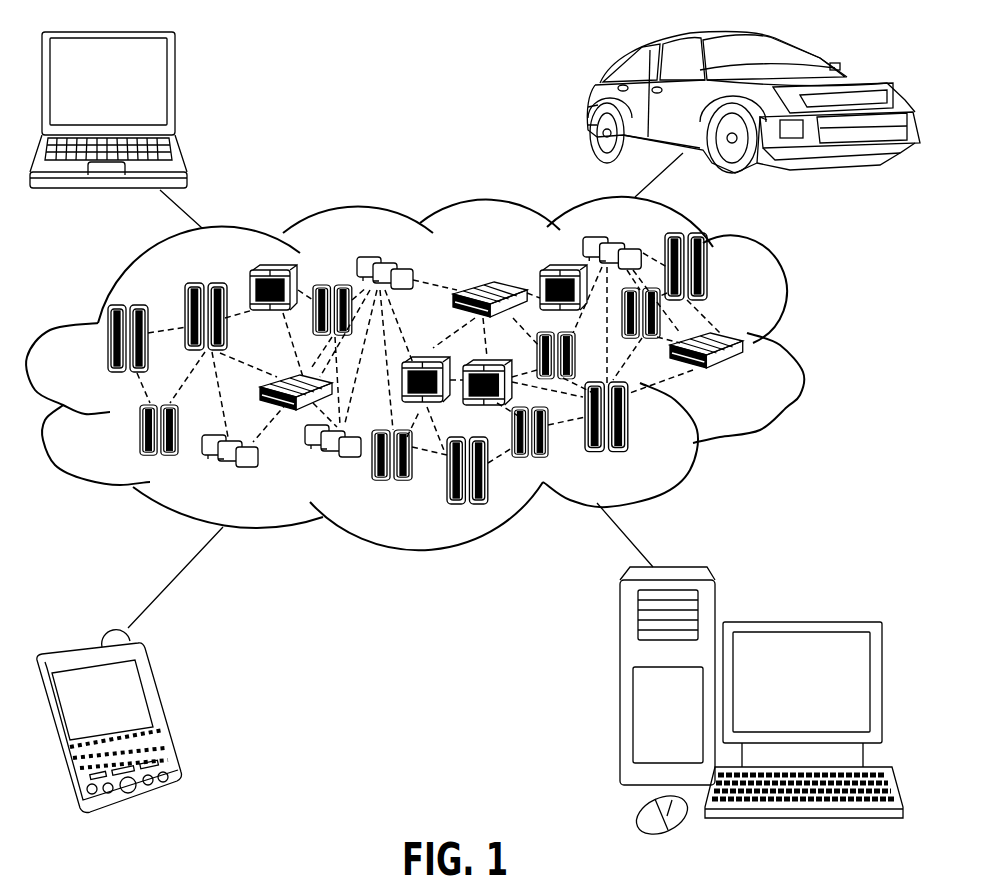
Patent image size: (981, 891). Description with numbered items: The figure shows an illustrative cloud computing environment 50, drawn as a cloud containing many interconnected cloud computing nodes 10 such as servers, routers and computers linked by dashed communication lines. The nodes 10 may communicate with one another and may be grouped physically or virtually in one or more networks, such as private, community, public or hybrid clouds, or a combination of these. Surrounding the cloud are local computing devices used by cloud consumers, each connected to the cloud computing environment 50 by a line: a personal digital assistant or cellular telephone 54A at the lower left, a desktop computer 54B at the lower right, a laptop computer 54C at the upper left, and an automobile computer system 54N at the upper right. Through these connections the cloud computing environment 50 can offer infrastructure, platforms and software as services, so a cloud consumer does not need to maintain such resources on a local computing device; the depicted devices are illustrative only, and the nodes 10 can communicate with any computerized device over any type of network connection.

The cloud computing node 10 is at (473, 437).
The cloud computing environment 50 is at (797, 346).
The personal digital assistant (PDA) or cellular telephone 54A is at (163, 712).
The desktop computer 54B is at (798, 622).
The laptop computer 54C is at (175, 90).
The automobile computer system 54N is at (590, 103).